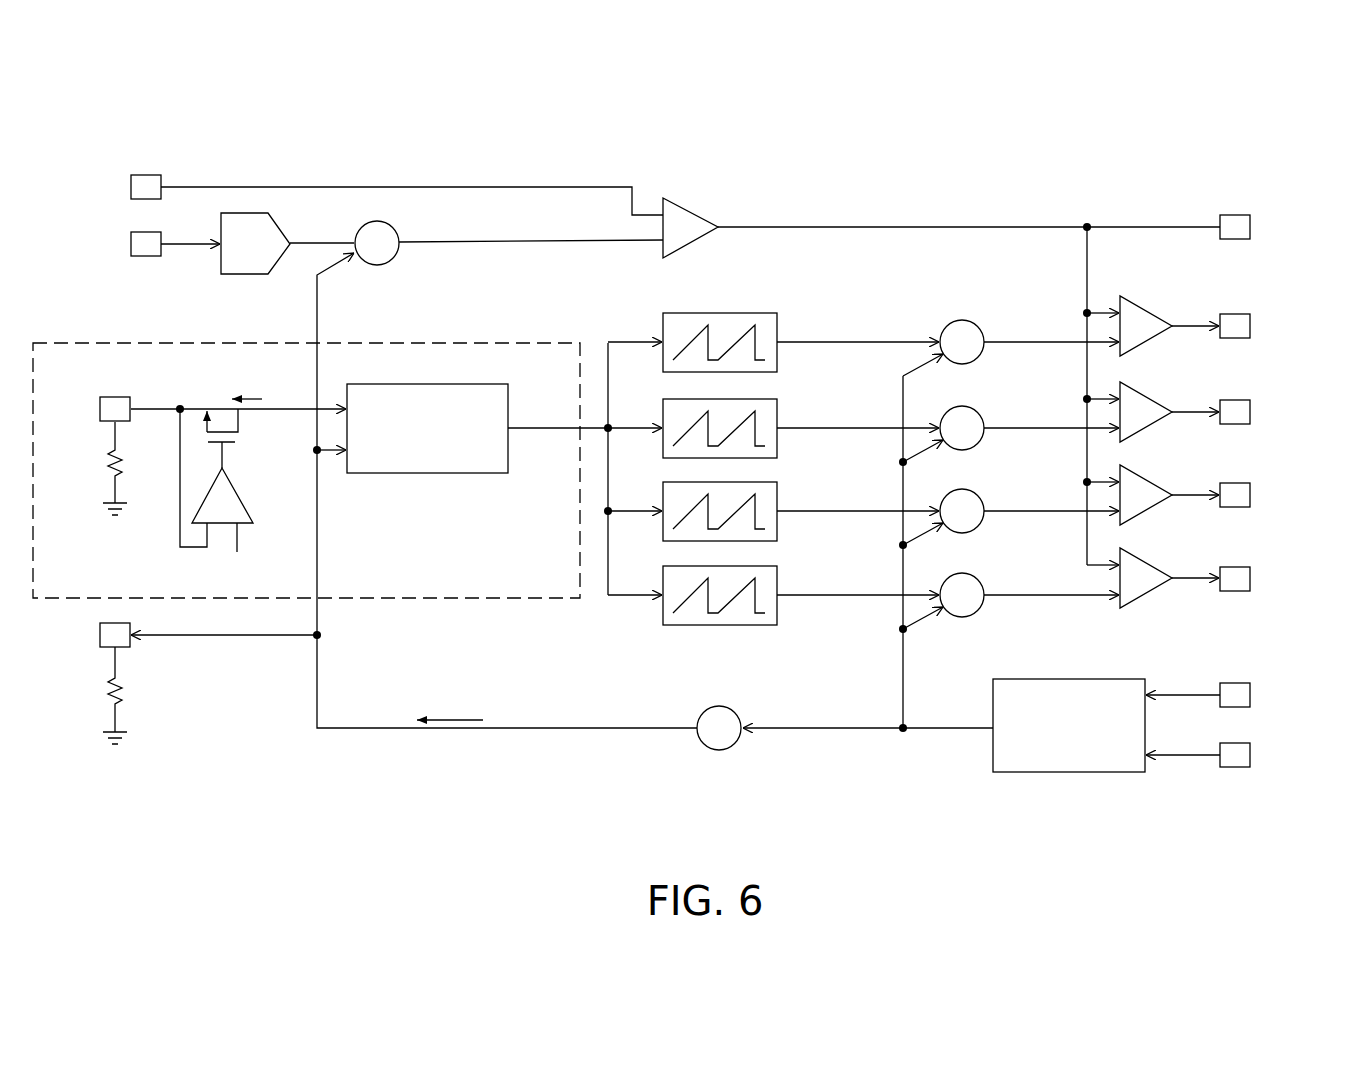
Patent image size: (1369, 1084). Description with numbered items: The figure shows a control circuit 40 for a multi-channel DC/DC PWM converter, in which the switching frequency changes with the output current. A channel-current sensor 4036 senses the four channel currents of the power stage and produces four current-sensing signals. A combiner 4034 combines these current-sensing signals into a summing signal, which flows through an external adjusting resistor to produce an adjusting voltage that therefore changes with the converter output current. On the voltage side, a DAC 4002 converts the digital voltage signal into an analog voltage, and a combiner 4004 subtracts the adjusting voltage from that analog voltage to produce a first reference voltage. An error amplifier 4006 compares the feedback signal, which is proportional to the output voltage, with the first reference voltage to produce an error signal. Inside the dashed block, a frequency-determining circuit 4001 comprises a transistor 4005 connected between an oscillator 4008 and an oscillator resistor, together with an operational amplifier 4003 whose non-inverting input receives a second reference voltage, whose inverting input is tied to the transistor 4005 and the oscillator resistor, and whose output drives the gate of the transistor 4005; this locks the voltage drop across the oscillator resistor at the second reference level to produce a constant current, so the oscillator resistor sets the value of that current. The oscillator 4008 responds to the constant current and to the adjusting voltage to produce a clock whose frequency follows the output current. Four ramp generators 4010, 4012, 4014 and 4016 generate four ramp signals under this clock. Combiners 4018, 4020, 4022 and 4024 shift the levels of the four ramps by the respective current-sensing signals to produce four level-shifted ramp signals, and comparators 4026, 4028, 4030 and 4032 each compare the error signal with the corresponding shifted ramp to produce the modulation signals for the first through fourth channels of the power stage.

The control circuit 40 is at (1317, 146).
The frequency-determining circuit 4001 is at (191, 343).
The DAC 4002 is at (245, 275).
The operational amplifier 4003 is at (240, 490).
The combiner 4004 is at (394, 262).
The transistor 4005 is at (221, 399).
The error amplifier 4006 is at (690, 208).
The oscillator 4008 is at (427, 474).
The ramp generator 4010 is at (768, 313).
The ramp generator 4012 is at (768, 399).
The ramp generator 4014 is at (768, 482).
The ramp generator 4016 is at (768, 566).
The combiner 4018 is at (978, 326).
The combiner 4020 is at (978, 412).
The combiner 4022 is at (978, 495).
The combiner 4024 is at (978, 579).
The comparator 4026 is at (1148, 312).
The comparator 4028 is at (1148, 398).
The comparator 4030 is at (1148, 481).
The comparator 4032 is at (1148, 564).
The combiner 4034 is at (710, 708).
The channel-current sensor 4036 is at (1070, 680).